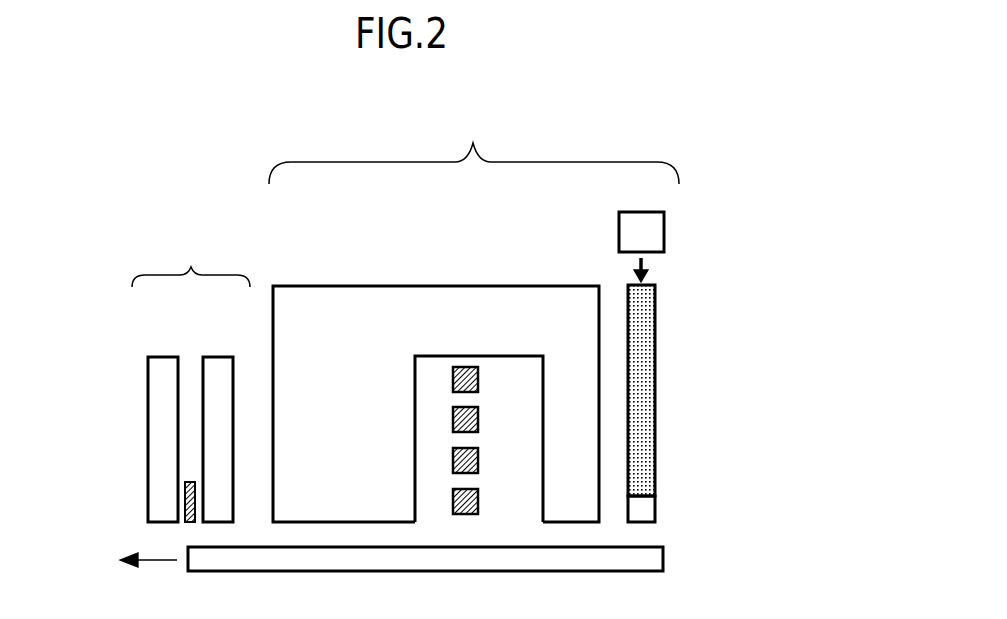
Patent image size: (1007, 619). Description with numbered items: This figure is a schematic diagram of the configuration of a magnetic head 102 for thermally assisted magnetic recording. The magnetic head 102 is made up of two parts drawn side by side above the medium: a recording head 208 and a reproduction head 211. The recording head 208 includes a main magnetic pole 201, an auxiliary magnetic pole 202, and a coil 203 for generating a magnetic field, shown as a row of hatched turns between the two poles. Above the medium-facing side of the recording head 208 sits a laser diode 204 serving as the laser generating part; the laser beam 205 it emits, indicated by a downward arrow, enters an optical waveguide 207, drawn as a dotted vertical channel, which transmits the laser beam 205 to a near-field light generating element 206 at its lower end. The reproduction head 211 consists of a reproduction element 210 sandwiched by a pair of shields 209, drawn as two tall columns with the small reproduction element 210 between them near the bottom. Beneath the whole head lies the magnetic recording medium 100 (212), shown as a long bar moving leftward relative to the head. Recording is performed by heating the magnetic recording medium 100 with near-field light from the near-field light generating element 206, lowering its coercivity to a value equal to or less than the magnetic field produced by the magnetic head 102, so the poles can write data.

The magnetic head 102 is at (122, 205).
The main magnetic pole 201 is at (580, 461).
The auxiliary magnetic pole 202 is at (388, 425).
The coil 203 is at (478, 382).
The laser diode 204 is at (657, 233).
The laser beam 205 is at (648, 264).
The near-field light generating element 206 is at (647, 509).
The optical waveguide 207 is at (648, 312).
The recording head 208 is at (474, 148).
The shields 209 is at (217, 358).
The reproduction element 210 is at (186, 500).
The reproduction head 211 is at (191, 263).
The magnetic recording medium 212 is at (648, 560).
The magnetic recording medium 100 is at (425, 559).